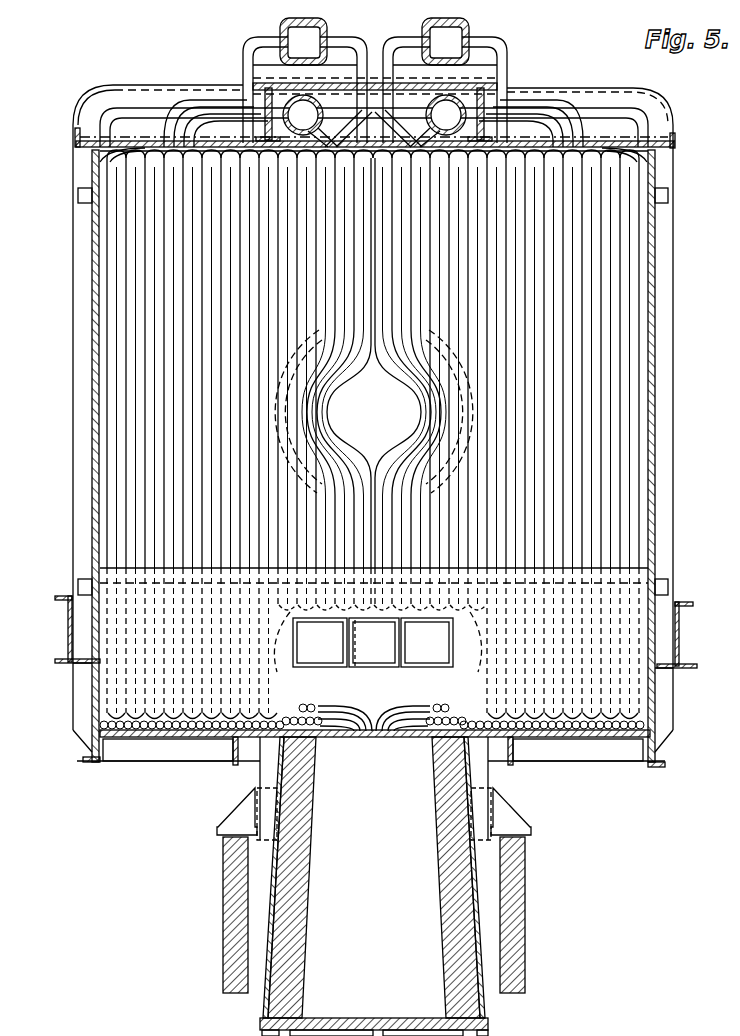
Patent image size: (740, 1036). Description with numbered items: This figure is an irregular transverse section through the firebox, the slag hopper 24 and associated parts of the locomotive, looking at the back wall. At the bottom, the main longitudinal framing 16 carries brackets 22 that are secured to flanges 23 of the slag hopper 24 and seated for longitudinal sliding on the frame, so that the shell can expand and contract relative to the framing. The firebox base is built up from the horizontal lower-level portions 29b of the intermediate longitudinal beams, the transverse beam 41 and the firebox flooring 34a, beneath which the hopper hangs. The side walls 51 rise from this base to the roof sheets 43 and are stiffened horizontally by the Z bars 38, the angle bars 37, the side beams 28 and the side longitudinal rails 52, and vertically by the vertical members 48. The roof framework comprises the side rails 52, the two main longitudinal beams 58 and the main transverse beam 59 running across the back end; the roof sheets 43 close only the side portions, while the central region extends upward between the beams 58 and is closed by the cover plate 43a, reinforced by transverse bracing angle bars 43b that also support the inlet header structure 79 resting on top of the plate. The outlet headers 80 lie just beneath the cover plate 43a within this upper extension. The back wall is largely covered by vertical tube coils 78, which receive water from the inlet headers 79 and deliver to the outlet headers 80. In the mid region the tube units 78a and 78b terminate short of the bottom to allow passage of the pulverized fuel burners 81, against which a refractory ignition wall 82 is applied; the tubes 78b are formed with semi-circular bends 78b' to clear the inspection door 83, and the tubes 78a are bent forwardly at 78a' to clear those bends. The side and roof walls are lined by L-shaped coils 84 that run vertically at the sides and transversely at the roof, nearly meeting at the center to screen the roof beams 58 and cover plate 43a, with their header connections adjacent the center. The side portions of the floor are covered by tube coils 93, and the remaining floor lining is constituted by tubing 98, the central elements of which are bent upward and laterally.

The main longitudinal framing 16 is at (223, 894).
The brackets 22 is at (238, 814).
The flanges 23 is at (263, 778).
The slag hopper 24 is at (270, 995).
The side beams 28 is at (68, 622).
The horizontal portions of intermediate longitudinal beams 29b is at (236, 755).
The firebox flooring 34a is at (137, 737).
The angle bars 37 is at (90, 678).
The Z bars 38 is at (90, 762).
The transverse beam 41 is at (371, 750).
The roof sheets 43 is at (123, 133).
The cover plate 43a is at (373, 80).
The transverse bracing angle bars 43b is at (470, 73).
The vertical members 48 is at (73, 472).
The side walls 51 is at (95, 364).
The side longitudinal rails 52 is at (78, 143).
The main longitudinal beams 58 is at (247, 95).
The main transverse beam 59 is at (580, 92).
The vertical tube coils 78 is at (130, 271).
The tube units 78a is at (377, 652).
The tube units 78b is at (371, 656).
The forward bends 78a' is at (344, 419).
The semi-circular bends 78b' is at (366, 442).
The inlet header structure 79 is at (374, 41).
The outlet headers 80 is at (374, 115).
The pulverized fuel burners 81 is at (373, 642).
The refractory ignition wall 82 is at (336, 687).
The door 83 is at (374, 411).
The L-shaped coils 84 is at (150, 156).
The tube coils 93 is at (197, 735).
The tubing 98 is at (320, 713).